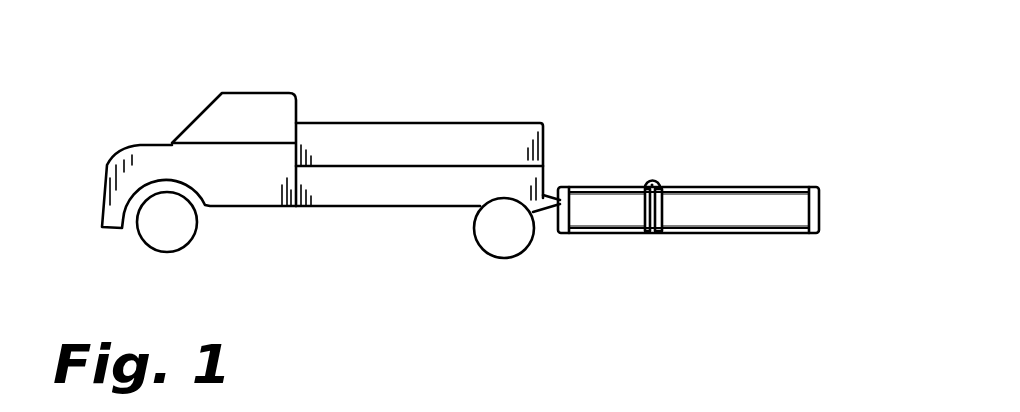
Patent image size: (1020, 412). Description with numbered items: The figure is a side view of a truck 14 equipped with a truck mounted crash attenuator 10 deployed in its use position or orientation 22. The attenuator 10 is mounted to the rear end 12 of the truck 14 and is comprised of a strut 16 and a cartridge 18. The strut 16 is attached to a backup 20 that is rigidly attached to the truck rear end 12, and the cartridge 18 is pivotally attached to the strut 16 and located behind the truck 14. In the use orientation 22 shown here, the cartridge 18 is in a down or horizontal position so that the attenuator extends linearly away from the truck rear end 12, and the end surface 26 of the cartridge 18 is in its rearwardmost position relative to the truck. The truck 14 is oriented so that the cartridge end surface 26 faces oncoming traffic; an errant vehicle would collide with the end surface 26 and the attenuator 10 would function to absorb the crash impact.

The truck mounted crash attenuator 10 is at (717, 245).
The rear end 12 is at (547, 145).
The truck 14 is at (407, 137).
The strut 16 is at (605, 212).
The cartridge 18 is at (790, 200).
The backup 20 is at (566, 178).
The use position or orientation 22 is at (754, 140).
The end surface 26 is at (820, 212).